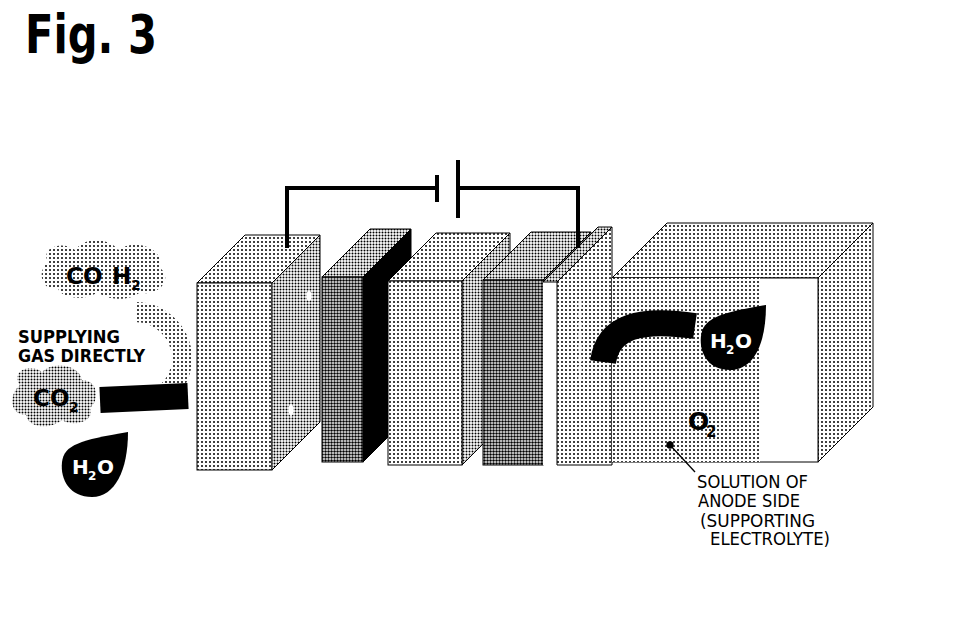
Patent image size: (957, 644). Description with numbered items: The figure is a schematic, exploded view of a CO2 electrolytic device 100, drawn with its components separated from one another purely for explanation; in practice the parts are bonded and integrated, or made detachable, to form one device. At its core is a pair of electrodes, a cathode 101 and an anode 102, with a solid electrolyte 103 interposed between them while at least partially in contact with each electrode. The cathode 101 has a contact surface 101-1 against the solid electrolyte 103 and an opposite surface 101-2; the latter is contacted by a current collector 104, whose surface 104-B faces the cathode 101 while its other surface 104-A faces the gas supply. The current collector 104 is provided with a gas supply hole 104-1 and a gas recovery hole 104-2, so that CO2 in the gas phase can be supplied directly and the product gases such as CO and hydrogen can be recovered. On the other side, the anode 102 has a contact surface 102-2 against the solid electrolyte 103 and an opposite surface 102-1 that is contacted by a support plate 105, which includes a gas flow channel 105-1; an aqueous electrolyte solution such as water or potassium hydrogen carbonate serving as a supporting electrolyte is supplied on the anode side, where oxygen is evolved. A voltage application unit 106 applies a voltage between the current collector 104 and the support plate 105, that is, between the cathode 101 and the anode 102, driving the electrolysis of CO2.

The CO2 electrolytic device 100 is at (298, 114).
The cathode 101 is at (313, 359).
The contact surface with solid electrolyte of cathode 101-1 is at (343, 435).
The surface in contact with current collector of cathode 101-2 is at (357, 242).
The anode 102 is at (617, 343).
The surface in contact with support plate of anode 102-1 is at (558, 262).
The contact surface with solid electrolyte of anode 102-2 is at (528, 235).
The solid electrolyte 103 is at (432, 418).
The current collector 104 is at (167, 361).
The gas supply hole of current collector 104-1 is at (290, 418).
The gas recovery hole of current collector 104-2 is at (308, 302).
The surface facing the gas supply of current collector 104-A is at (196, 443).
The surface facing the cathode of current collector 104-B is at (292, 452).
The support plate 105 is at (683, 399).
The gas flow channel of support plate 105-1 is at (582, 383).
The voltage application unit 106 is at (442, 173).